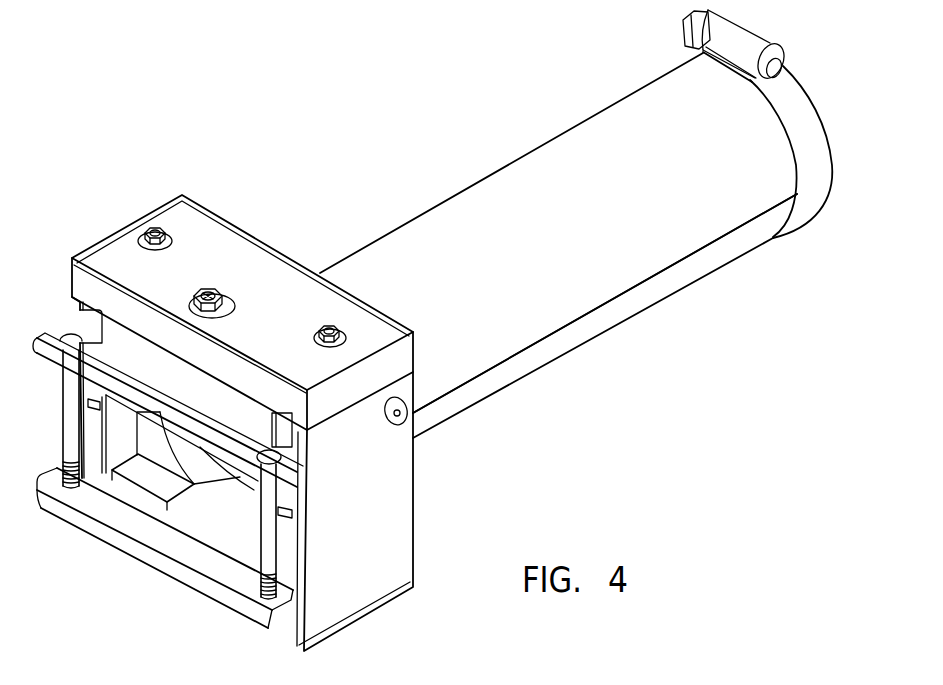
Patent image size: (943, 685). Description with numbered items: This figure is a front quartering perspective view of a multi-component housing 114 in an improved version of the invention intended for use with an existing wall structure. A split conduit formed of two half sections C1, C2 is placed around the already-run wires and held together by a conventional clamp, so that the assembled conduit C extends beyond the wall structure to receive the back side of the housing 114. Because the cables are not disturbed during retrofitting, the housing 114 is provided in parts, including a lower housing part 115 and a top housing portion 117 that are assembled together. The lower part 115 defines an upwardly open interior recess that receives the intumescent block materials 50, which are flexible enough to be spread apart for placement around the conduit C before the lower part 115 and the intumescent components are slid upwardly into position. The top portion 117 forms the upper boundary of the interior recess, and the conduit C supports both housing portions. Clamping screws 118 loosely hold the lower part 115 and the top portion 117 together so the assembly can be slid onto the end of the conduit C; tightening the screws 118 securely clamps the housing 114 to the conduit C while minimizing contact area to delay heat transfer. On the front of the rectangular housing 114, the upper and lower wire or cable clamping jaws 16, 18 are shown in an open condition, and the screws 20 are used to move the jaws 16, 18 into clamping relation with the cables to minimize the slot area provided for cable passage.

The conduit C is at (576, 224).
The conduit half section C1 is at (503, 200).
The conduit half section C2 is at (574, 340).
The housing 114 is at (262, 378).
The lower housing part 115 is at (367, 588).
The top housing portion 117 is at (125, 250).
The clamping screws 118 is at (157, 226).
The cable clamping jaw 16 is at (85, 371).
The cable clamping jaw 18 is at (105, 536).
The screws 20 is at (70, 431).
The intumescent block materials 50 is at (160, 486).